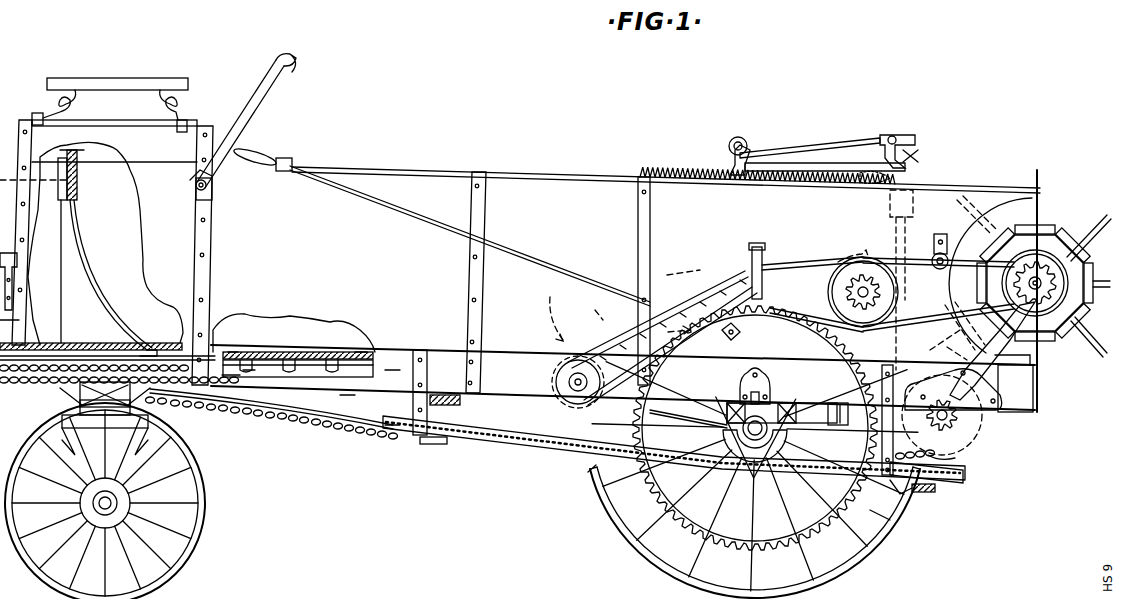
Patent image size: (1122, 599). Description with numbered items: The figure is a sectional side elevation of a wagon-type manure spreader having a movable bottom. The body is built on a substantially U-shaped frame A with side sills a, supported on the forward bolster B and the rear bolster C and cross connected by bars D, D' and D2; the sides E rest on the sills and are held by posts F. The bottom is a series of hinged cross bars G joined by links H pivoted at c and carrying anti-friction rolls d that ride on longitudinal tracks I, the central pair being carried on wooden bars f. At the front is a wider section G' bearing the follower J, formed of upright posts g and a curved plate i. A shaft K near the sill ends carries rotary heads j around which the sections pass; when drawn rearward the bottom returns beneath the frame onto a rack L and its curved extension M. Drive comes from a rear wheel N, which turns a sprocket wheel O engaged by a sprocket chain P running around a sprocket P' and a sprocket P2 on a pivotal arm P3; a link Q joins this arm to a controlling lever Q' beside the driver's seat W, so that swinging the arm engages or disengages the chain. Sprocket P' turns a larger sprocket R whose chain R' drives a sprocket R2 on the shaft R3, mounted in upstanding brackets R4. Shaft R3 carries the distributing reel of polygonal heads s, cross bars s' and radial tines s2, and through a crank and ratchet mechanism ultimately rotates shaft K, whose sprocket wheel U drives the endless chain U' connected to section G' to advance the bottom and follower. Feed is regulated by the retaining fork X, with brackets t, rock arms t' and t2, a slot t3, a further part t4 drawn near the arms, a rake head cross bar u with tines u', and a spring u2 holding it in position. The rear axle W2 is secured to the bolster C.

The driver's seat W is at (140, 82).
The posts F is at (33, 130).
The follower J is at (105, 243).
The curved plate i is at (80, 238).
The upright posts g is at (50, 330).
The wider section G' is at (130, 327).
The forward bolster B is at (78, 392).
The pivot c is at (232, 372).
The anti-friction rolls d is at (248, 372).
The curved bars M is at (305, 420).
The wooden bars f is at (345, 397).
The U-shaped frame A is at (393, 375).
The endless chain U' is at (386, 449).
The links H is at (228, 368).
The cross bars G is at (294, 345).
The tracks I is at (313, 356).
The side sills a is at (400, 358).
The controlling lever Q' is at (243, 127).
The sides E is at (430, 183).
The link Q is at (470, 236).
The pivotal arm P3 is at (615, 350).
The sprocket P2 is at (568, 392).
The cross bar D is at (457, 406).
The rack L is at (520, 440).
The shaft K is at (560, 445).
The sprocket wheel O is at (605, 503).
The cross bar D' is at (755, 428).
The shaft or axle W2 is at (722, 424).
The retaining fork X is at (775, 378).
The rear bolster C is at (782, 412).
The cross bar D2 is at (832, 426).
The rear wheel N is at (895, 512).
The sprocket chain P is at (881, 285).
The sprocket P' is at (853, 243).
The sprocket R is at (863, 277).
The chain R' is at (926, 243).
The cross bar u is at (920, 266).
The tines u' is at (952, 279).
The spring u2 is at (692, 172).
The brackets t is at (728, 159).
The pawl loop t4 is at (743, 138).
The rock arm t2 is at (803, 150).
The slot t3 is at (889, 136).
The rock arm t' is at (825, 156).
The polygonal heads s is at (990, 275).
The sprocket R2 is at (1040, 275).
The cross bars s' is at (1044, 278).
The tines s2 is at (1090, 340).
The shaft R3 is at (1035, 345).
The brackets R4 is at (1010, 352).
The rotary heads j is at (985, 412).
The sprocket wheel U is at (934, 471).